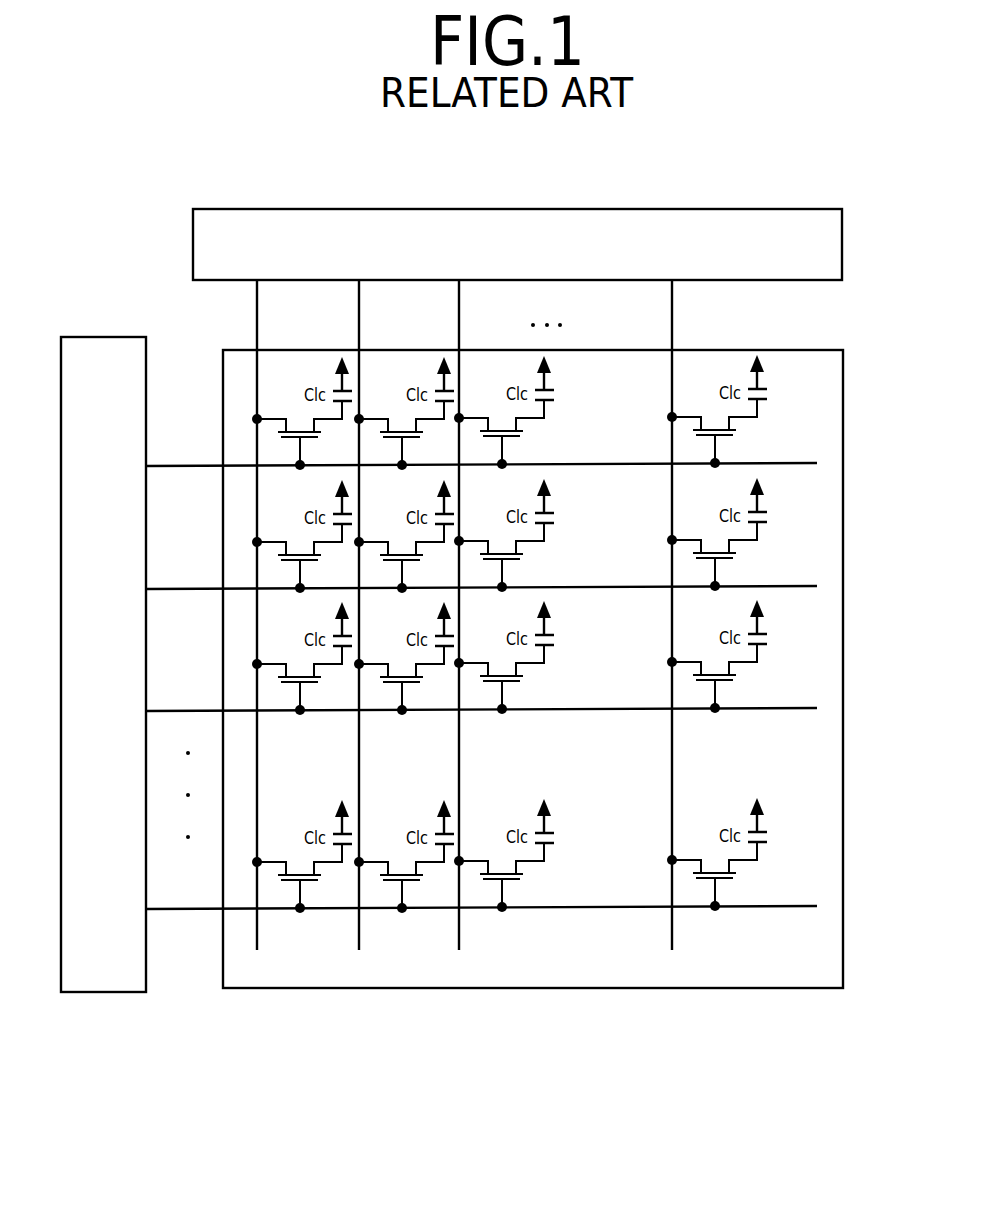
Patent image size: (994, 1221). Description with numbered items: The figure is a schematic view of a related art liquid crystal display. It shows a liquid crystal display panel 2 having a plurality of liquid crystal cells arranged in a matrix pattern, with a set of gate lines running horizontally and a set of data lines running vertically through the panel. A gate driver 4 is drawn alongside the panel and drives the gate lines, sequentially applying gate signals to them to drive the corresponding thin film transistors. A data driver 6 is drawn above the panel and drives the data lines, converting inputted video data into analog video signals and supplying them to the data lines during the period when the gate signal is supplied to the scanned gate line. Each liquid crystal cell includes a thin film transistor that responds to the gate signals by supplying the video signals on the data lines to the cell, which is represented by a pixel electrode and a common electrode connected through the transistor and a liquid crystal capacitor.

The liquid crystal display panel 2 is at (843, 375).
The gate driver 4 is at (105, 992).
The data driver 6 is at (713, 209).